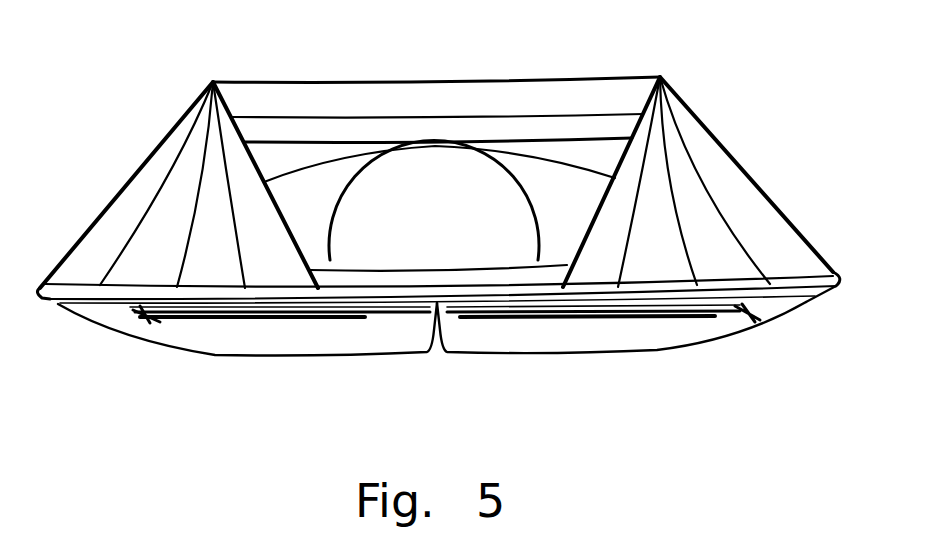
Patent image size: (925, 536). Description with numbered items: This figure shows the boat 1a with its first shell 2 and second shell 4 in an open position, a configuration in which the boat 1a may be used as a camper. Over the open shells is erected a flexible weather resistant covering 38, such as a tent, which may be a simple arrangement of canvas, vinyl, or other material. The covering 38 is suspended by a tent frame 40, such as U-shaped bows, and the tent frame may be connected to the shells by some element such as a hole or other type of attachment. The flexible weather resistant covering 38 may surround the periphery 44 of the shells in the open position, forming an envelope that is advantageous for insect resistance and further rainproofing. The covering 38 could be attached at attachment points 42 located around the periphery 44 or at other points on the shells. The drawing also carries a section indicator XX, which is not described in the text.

The flexible weather resistant covering 38 is at (343, 82).
The tent frame 40 is at (612, 165).
The section line XX is at (610, 200).
The attachment points 42 is at (828, 271).
The periphery 44 is at (799, 291).
The boat 1a is at (705, 351).
The first shell 2 is at (250, 345).
The second shell 4 is at (578, 335).